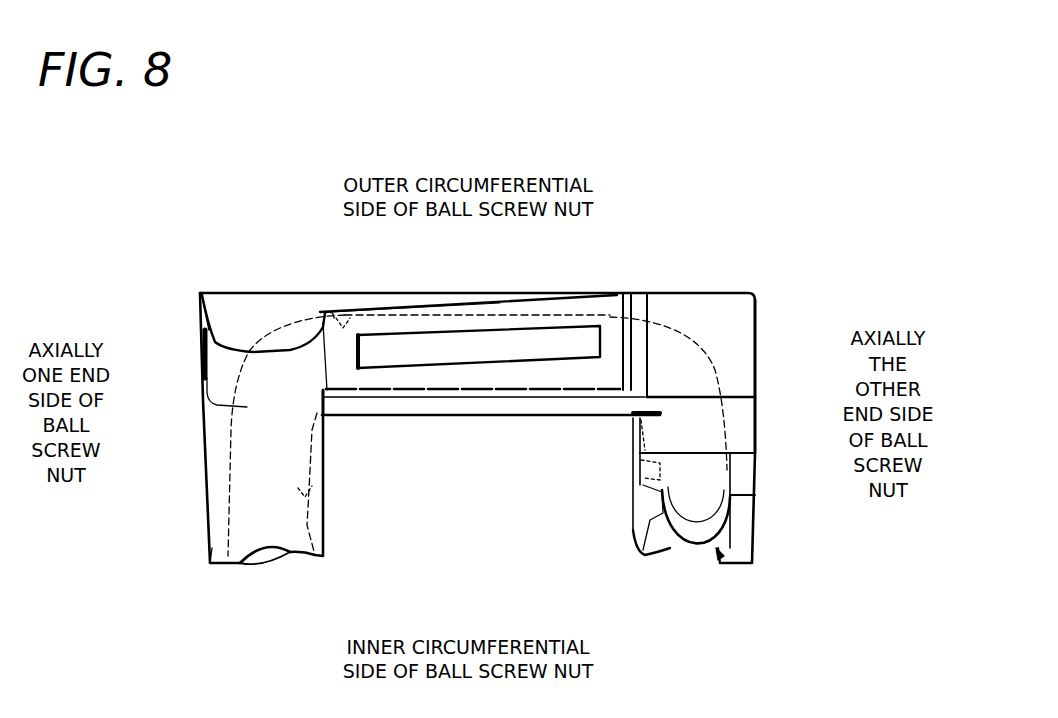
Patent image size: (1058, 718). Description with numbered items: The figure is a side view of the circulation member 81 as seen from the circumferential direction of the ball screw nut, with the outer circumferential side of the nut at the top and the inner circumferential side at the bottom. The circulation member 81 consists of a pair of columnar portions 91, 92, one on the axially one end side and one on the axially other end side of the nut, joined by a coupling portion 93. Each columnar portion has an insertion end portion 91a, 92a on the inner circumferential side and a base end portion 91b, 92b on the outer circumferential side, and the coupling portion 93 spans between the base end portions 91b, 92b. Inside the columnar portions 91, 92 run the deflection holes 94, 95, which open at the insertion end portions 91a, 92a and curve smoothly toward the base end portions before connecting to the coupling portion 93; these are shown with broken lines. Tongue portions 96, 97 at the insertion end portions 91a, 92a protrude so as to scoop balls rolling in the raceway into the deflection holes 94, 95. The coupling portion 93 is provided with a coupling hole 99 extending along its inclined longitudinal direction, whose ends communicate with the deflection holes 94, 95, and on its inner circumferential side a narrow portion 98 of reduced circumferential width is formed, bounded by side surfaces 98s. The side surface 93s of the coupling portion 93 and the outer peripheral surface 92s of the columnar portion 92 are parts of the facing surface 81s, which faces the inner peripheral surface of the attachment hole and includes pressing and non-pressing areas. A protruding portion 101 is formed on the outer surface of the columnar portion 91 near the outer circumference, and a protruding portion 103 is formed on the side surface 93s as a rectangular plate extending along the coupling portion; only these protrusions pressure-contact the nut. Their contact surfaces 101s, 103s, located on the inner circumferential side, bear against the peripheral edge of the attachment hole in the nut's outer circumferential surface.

The circulation member 81 is at (158, 226).
The facing surface 81s is at (477, 435).
The columnar portion 91 is at (203, 396).
The insertion end portion 91a is at (214, 549).
The base end portion 91b is at (203, 307).
The columnar portion 92 is at (756, 352).
The insertion end portion 92a is at (742, 525).
The base end portion 92b is at (756, 303).
The outer peripheral surface 92s is at (756, 410).
The coupling portion 93 is at (438, 296).
The side surface 93s is at (483, 302).
The deflection hole 94 is at (300, 500).
The deflection hole 95 is at (647, 473).
The tongue portion 96 is at (262, 565).
The tongue portion 97 is at (688, 553).
The narrow portion 98 is at (411, 403).
The side surface 98s is at (496, 403).
The coupling hole 99 is at (337, 296).
The protruding portion 101 is at (204, 346).
The contact surface 101s is at (253, 376).
The protruding portion 103 is at (400, 345).
The contact surface 103s is at (592, 360).